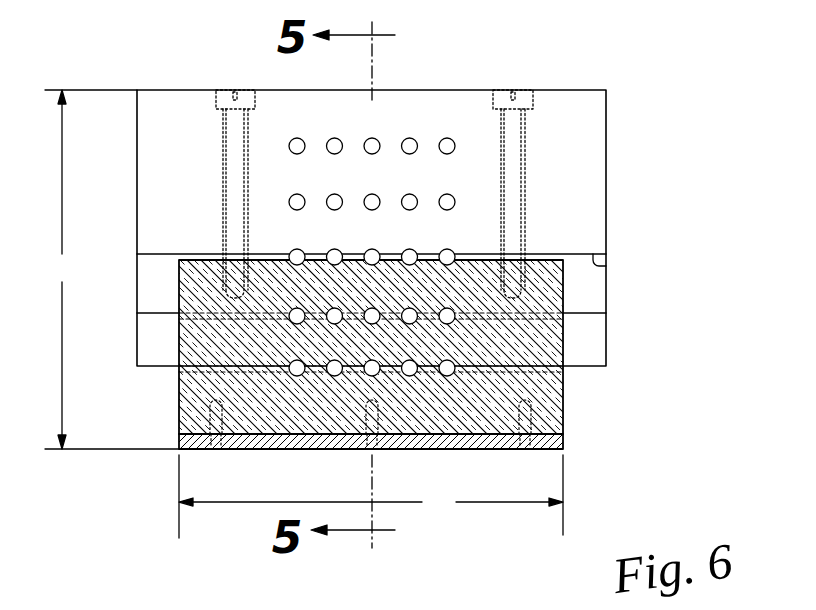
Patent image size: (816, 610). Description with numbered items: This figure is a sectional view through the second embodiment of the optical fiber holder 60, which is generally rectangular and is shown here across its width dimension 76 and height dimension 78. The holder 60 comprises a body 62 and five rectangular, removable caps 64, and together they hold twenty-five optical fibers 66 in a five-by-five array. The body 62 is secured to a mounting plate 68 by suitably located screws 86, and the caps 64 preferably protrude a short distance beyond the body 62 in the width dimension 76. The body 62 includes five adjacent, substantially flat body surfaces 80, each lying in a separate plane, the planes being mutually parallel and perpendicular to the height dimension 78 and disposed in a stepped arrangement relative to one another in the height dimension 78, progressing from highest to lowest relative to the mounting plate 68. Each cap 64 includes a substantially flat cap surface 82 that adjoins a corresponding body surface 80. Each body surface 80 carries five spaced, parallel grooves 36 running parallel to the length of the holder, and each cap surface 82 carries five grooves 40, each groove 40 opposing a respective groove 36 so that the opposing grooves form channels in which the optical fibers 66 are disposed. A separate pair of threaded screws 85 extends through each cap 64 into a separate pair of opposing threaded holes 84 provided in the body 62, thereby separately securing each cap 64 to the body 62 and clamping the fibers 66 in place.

The optical fiber holder 60 is at (106, 57).
The body 62 is at (563, 393).
The caps 64 is at (599, 126).
The optical fibers 66 is at (372, 138).
The mounting plate 68 is at (563, 441).
The width dimension 76 is at (371, 496).
The height dimension 78 is at (112, 269).
The body surfaces 80 is at (541, 262).
The cap surface 82 is at (606, 266).
The threaded holes 84 is at (222, 285).
The threaded screws 85 is at (231, 90).
The screws 86 is at (217, 446).
The grooves 36 is at (332, 265).
The grooves 40 is at (298, 249).